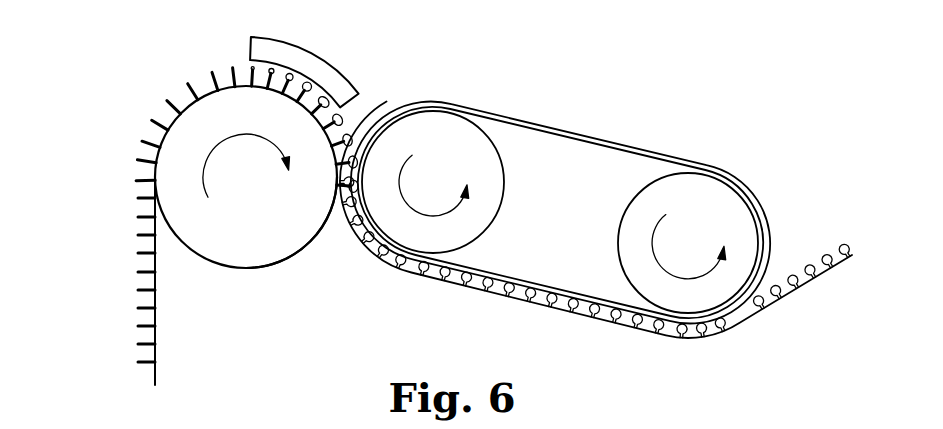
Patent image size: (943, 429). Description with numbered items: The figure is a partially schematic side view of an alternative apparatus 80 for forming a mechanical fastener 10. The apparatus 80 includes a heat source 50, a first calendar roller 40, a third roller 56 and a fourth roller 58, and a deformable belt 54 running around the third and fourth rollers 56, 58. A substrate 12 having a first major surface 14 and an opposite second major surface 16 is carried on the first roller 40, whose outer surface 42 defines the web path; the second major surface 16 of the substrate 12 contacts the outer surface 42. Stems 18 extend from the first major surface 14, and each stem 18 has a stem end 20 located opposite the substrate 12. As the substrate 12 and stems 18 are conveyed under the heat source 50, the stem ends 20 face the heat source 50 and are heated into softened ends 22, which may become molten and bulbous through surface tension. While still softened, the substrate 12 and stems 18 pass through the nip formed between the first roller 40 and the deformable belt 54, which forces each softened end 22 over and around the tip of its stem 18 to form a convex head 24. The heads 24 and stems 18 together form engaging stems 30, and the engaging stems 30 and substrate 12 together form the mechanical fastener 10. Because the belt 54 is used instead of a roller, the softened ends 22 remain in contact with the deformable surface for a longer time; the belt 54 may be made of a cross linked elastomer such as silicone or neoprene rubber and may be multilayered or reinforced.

The mechanical fastener 10 is at (836, 240).
The substrate 12 is at (155, 377).
The first major surface 14 is at (152, 280).
The second major surface 16 is at (155, 315).
The stems 18 is at (146, 182).
The stem end 20 is at (212, 73).
The softened end 22 is at (344, 119).
The convex head 24 is at (791, 301).
The engaging stems 30 is at (778, 268).
The first roller 40 is at (247, 254).
The outer surface 42 is at (311, 243).
The heat source 50 is at (312, 62).
The deformable belt 54 is at (585, 138).
The third roller 56 is at (415, 230).
The fourth roller 58 is at (698, 302).
The apparatus 80 is at (121, 83).